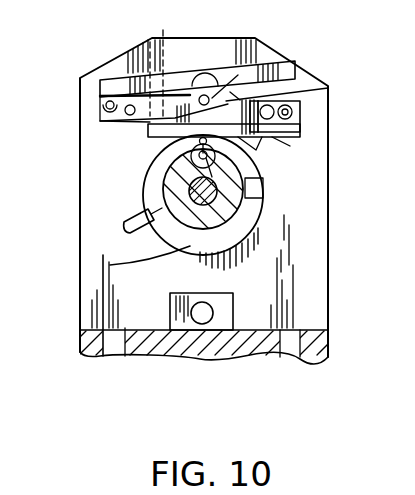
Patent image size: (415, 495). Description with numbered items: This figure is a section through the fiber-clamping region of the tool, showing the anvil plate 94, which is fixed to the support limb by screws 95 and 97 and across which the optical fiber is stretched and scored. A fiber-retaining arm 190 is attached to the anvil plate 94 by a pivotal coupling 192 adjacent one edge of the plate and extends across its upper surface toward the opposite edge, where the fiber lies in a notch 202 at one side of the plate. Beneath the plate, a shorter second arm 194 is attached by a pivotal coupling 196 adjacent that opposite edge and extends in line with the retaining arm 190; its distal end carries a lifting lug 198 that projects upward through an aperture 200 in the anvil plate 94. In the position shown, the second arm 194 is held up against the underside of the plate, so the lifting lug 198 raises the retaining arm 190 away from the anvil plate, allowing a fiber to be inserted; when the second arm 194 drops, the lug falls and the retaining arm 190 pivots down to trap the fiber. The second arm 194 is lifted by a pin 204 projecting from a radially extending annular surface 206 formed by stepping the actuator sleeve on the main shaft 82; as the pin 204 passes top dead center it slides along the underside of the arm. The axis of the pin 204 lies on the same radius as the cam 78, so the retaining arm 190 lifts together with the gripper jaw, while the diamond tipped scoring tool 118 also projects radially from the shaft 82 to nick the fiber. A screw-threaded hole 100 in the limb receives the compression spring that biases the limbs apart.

The anvil plate 94 is at (328, 88).
The fiber-retaining arm 190 is at (280, 64).
The lifting lug 198 is at (165, 97).
The pivotal coupling 192 is at (102, 107).
The screw 97 is at (150, 119).
The aperture 200 is at (164, 32).
The notch 202 is at (231, 64).
The pivotal coupling 196 is at (300, 112).
The second arm 194 is at (256, 151).
The screw 95 is at (278, 138).
The pin 204 is at (199, 141).
The cam 78 is at (163, 179).
The main shaft 82 is at (165, 198).
The diamond tipped scoring tool 118 is at (124, 226).
The radially extending annular surface 206 is at (110, 265).
The screw-threaded hole 100 is at (170, 298).